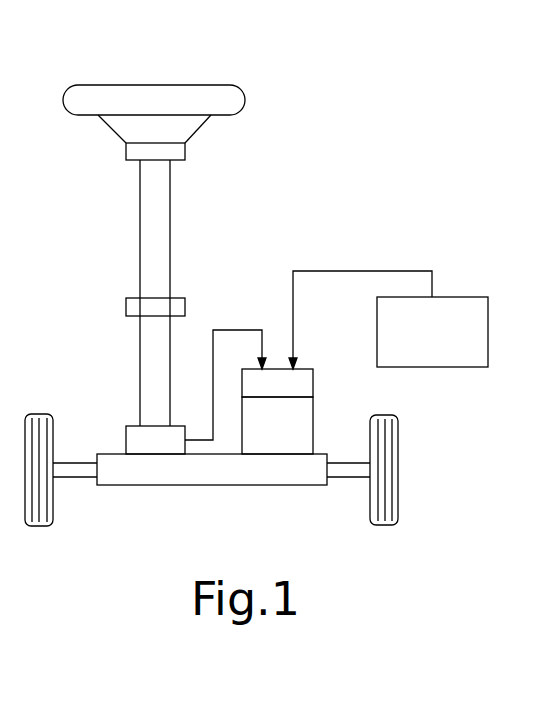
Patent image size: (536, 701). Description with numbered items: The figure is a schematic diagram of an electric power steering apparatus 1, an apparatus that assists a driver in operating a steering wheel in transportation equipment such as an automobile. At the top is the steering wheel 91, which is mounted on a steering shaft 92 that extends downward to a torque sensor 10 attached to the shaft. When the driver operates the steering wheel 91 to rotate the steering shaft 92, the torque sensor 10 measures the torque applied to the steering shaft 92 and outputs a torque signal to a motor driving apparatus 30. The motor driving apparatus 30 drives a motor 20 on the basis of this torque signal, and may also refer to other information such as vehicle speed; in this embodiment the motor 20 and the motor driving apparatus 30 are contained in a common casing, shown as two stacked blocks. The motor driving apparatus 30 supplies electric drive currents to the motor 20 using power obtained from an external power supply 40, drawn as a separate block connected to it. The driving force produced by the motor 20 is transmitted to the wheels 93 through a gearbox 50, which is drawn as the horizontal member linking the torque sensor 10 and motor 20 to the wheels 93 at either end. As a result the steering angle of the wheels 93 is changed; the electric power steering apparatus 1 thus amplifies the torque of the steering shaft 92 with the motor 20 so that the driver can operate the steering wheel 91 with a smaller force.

The electric power steering apparatus 1 is at (358, 94).
The torque sensor 10 is at (133, 425).
The motor 20 is at (313, 415).
The motor driving apparatus 30 is at (313, 382).
The external power supply 40 is at (457, 297).
The gearbox 50 is at (279, 486).
The steering wheel 91 is at (190, 84).
The steering shaft 92 is at (171, 235).
The wheels 93 is at (399, 490).